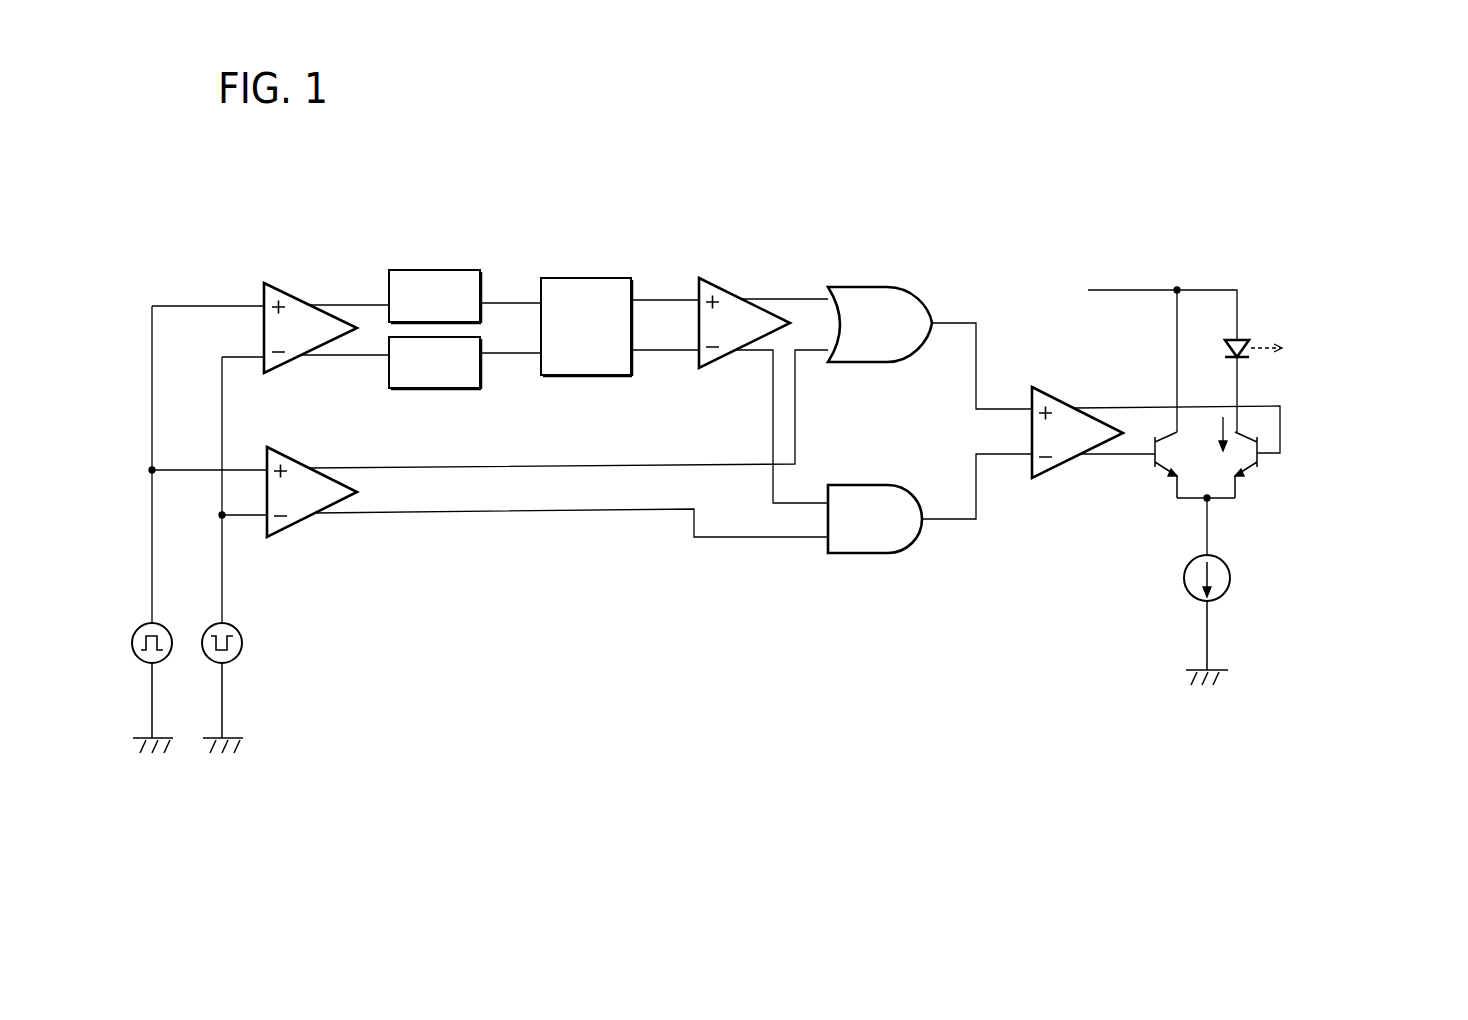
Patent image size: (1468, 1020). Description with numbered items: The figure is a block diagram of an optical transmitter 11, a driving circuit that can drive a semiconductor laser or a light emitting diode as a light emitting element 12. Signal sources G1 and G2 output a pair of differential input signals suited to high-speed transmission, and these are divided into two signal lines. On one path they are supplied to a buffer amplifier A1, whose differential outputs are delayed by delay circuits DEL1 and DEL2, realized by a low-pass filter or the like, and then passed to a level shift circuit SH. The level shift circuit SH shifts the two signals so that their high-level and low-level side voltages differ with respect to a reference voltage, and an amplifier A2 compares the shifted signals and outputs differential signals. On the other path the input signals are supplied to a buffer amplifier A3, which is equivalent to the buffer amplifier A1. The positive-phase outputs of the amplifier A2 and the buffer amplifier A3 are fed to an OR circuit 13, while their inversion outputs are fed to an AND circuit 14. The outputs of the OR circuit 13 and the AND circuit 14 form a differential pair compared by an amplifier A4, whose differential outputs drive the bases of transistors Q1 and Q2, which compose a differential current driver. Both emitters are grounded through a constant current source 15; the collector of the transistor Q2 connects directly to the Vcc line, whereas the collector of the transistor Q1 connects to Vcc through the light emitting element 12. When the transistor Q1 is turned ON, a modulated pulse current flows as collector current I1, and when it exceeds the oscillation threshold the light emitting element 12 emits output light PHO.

The optical transmitter 11 is at (247, 222).
The light emitting element 12 is at (1238, 338).
The OR circuit 13 is at (861, 286).
The AND circuit 14 is at (868, 484).
The constant current source 15 is at (1231, 578).
The buffer amplifier A1 is at (295, 292).
The amplifier A2 is at (728, 288).
The buffer amplifier A3 is at (295, 457).
The amplifier A4 is at (1056, 391).
The delay circuit DEL1 is at (433, 270).
The delay circuit DEL2 is at (435, 392).
The level shift circuit SH is at (586, 277).
The signal source G1 is at (140, 628).
The signal source G2 is at (243, 643).
The transistor Q1 is at (1259, 467).
The transistor Q2 is at (1154, 467).
The collector current I1 is at (1210, 434).
The output light PHO is at (1294, 352).